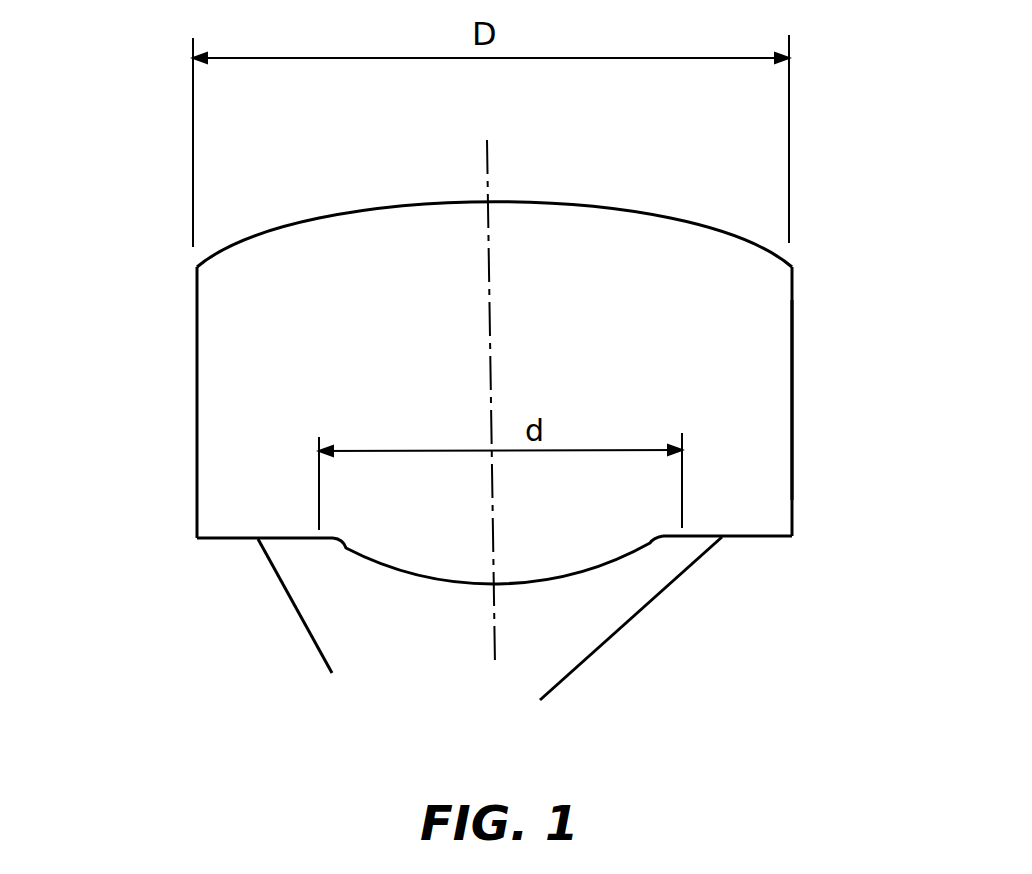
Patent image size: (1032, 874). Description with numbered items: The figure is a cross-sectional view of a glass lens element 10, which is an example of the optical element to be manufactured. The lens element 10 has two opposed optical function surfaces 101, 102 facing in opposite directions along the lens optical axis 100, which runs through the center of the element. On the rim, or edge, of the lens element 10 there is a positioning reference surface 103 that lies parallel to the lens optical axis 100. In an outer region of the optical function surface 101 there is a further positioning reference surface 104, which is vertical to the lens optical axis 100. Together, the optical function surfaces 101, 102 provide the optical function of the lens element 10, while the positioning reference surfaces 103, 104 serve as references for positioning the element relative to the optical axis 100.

The glass lens element 10 is at (196, 399).
The lens optical axis 100 is at (488, 165).
The optical function surface 101 is at (431, 582).
The optical function surface 102 is at (360, 213).
The positioning reference surface 103 is at (795, 445).
The positioning reference surface 104 is at (332, 673).